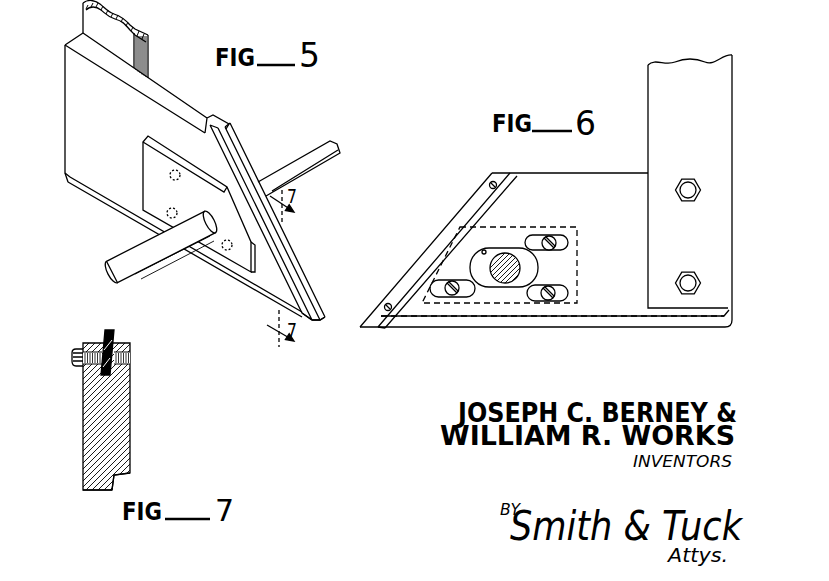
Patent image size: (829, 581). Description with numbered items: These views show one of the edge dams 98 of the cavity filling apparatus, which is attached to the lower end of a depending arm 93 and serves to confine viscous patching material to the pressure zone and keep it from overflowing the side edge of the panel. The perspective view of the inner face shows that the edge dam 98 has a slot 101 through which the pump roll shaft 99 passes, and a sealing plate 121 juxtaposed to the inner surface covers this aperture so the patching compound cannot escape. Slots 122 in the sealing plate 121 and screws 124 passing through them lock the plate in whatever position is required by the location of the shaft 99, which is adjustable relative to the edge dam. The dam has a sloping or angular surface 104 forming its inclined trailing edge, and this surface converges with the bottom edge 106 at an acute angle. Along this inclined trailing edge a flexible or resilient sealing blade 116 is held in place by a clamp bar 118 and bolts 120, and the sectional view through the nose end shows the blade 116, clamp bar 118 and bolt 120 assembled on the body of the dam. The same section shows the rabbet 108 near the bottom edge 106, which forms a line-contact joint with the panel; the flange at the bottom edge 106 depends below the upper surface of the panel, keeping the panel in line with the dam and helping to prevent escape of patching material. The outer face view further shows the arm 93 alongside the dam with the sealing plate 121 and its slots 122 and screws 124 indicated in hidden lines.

In FIG. 5, the depending arm 93 is at (148, 44).
In FIG. 6, the depending arm 93 is at (700, 125).
In FIG. 5, the edge dam 98 is at (75, 97).
In FIG. 7, the edge dam 98 is at (129, 419).
In FIG. 6, the edge dam 98 is at (580, 198).
In FIG. 5, the pump roll shaft 99 is at (143, 248).
In FIG. 6, the pump roll shaft 99 is at (504, 272).
In FIG. 6, the slot 101 is at (487, 250).
In FIG. 5, the sloping or angular surface 104 is at (231, 177).
In FIG. 7, the sloping or angular surface 104 is at (116, 347).
In FIG. 5, the bottom edge 106 is at (303, 326).
In FIG. 7, the bottom edge 106 is at (90, 493).
In FIG. 5, the rabbet 108 is at (247, 285).
In FIG. 7, the rabbet 108 is at (122, 478).
In FIG. 5, the sealing blade 116 is at (306, 298).
In FIG. 7, the sealing blade 116 is at (107, 330).
In FIG. 6, the sealing blade 116 is at (466, 204).
In FIG. 5, the clamp bar 118 is at (297, 261).
In FIG. 7, the clamp bar 118 is at (98, 343).
In FIG. 6, the clamp bar 118 is at (483, 198).
In FIG. 7, the bolts 120 is at (73, 355).
In FIG. 6, the bolts 120 is at (491, 183).
In FIG. 5, the sealing plate 121 is at (150, 159).
In FIG. 6, the sealing plate 121 is at (487, 305).
In FIG. 6, the slots 122 is at (565, 286).
In FIG. 6, the screws 124 is at (554, 239).